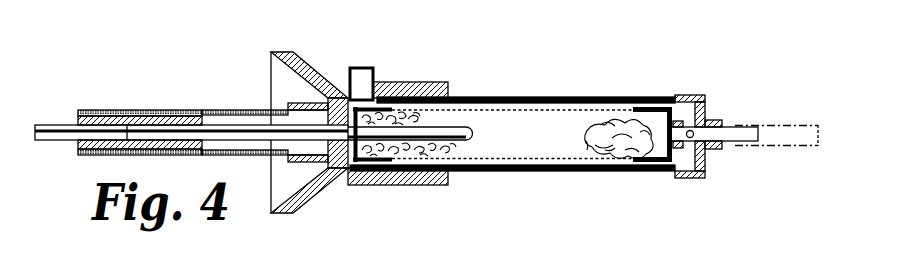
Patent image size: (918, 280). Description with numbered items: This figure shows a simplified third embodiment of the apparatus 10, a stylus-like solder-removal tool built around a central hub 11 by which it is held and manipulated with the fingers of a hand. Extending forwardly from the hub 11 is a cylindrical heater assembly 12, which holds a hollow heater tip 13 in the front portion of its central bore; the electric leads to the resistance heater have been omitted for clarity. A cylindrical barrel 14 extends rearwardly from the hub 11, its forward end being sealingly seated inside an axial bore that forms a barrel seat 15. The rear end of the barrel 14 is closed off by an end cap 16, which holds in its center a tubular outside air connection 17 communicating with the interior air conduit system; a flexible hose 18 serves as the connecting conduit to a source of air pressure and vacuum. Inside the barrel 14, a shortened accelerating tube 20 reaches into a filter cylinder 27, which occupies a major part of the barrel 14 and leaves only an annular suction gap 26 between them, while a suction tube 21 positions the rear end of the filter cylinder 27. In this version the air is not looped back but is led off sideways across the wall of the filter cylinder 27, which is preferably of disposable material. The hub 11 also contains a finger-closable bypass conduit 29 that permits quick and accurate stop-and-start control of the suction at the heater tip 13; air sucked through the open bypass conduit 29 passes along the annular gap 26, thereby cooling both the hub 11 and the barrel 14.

The apparatus 10 is at (259, 86).
The central hub 11 is at (393, 82).
The cylindrical heater assembly 12 is at (157, 112).
The hollow heater tip 13 is at (57, 124).
The cylindrical barrel 14 is at (597, 100).
The barrel seat 15 is at (447, 115).
The end cap 16 is at (705, 105).
The tubular outside air connection 17 is at (728, 126).
The flexible hose 18 is at (773, 147).
The accelerating tube 20 is at (473, 133).
The suction tube 21 is at (690, 140).
The annular suction gap 26 is at (583, 162).
The filter cylinder 27 is at (522, 153).
The finger-closable bypass conduit 29 is at (365, 80).